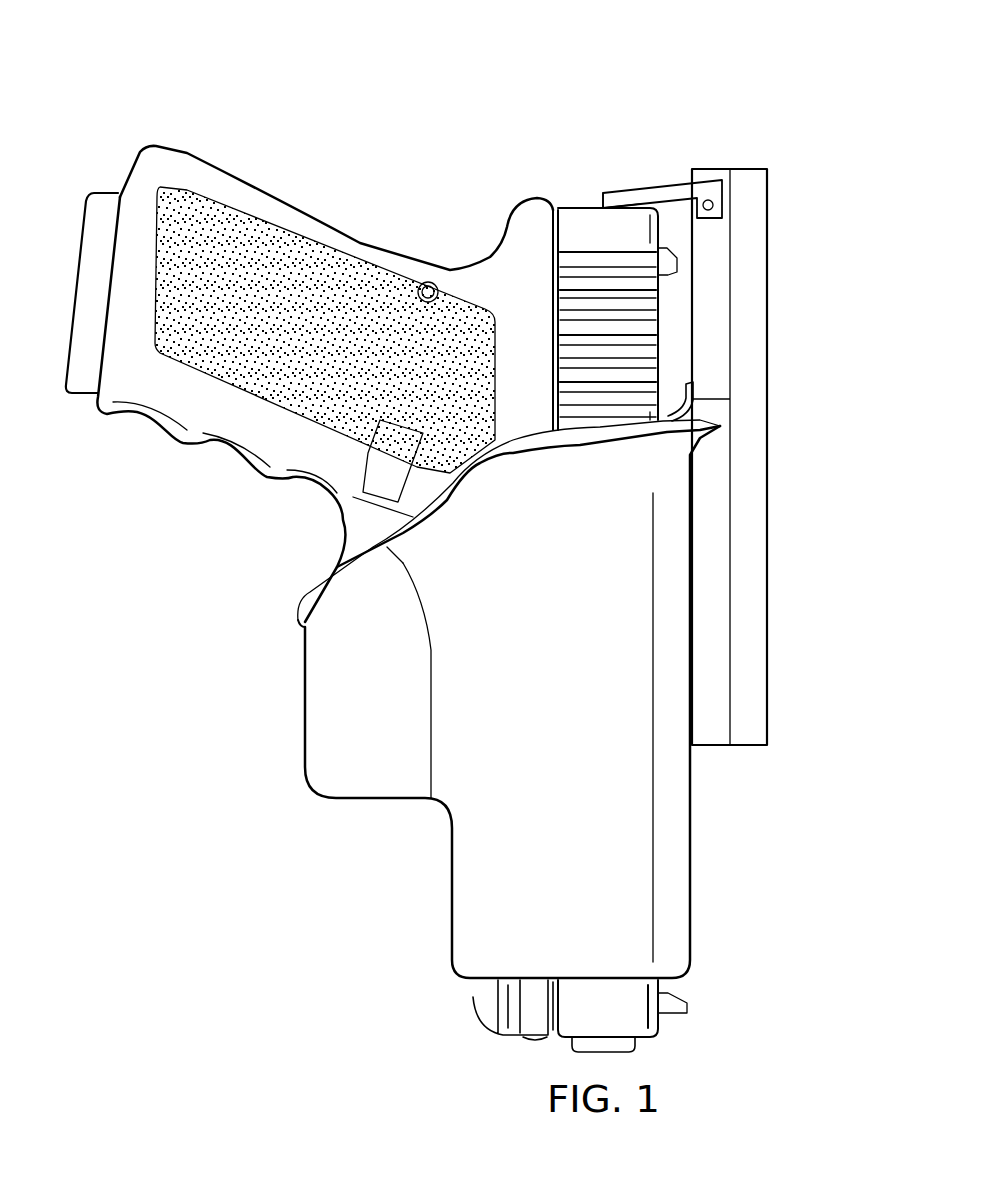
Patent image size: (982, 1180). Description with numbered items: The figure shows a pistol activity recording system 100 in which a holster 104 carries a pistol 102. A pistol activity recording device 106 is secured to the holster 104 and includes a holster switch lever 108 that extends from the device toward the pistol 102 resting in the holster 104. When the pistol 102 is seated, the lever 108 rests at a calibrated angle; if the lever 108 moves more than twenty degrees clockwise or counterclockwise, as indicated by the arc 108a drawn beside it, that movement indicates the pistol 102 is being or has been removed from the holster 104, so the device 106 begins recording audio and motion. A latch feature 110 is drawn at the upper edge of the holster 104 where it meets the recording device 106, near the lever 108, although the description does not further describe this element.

The pistol activity recording system 100 is at (304, 72).
The pistol 102 is at (573, 207).
The holster 104 is at (303, 695).
The pistol activity recording device 106 is at (771, 508).
The holster switch lever 108 is at (673, 190).
The arc 108a is at (612, 238).
The latch hook 110 is at (667, 422).